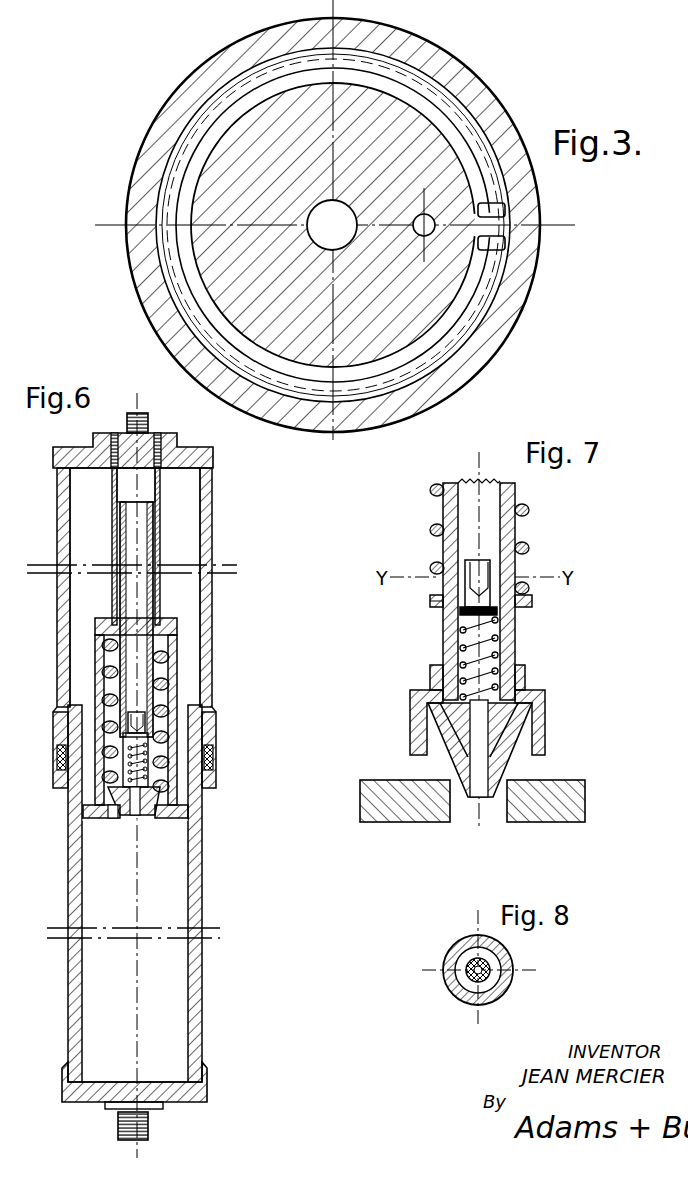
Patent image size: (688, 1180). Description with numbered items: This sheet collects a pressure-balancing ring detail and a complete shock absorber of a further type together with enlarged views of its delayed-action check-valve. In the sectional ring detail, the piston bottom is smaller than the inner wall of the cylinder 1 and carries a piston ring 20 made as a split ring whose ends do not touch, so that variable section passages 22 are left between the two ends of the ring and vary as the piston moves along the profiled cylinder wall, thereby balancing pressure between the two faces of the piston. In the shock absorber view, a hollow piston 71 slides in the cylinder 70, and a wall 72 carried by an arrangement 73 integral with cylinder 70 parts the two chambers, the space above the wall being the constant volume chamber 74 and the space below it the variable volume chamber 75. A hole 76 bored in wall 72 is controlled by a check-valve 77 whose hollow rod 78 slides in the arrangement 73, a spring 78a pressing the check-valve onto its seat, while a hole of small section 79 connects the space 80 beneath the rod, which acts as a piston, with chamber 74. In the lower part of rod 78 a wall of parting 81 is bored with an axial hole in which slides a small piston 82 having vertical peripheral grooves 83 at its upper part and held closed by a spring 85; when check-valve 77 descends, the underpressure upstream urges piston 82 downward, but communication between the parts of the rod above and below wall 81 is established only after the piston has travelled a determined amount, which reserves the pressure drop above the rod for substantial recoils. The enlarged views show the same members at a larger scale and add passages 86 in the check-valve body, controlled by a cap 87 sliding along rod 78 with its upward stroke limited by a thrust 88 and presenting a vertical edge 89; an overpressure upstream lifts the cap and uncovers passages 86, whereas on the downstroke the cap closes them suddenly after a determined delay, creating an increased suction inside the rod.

In FIG. 3, the cylinder 1 is at (522, 262).
In FIG. 3, the piston ring 20 is at (178, 195).
In FIG. 3, the variable section passages 22 is at (497, 233).
In FIG. 6, the cylinder 70 is at (212, 548).
In FIG. 6, the hollow piston 71 is at (195, 842).
In FIG. 6, the wall 72 is at (188, 810).
In FIG. 6, the arrangement 73 is at (162, 492).
In FIG. 6, the constant volume chamber 74 is at (97, 517).
In FIG. 6, the variable volume chamber 75 is at (103, 880).
In FIG. 6, the hole 76 is at (142, 833).
In FIG. 6, the check-valve 77 is at (115, 798).
In FIG. 7, the check-valve 77 is at (520, 762).
In FIG. 6, the hollow rod 78 is at (162, 530).
In FIG. 7, the hollow rod 78 is at (512, 543).
In FIG. 8, the hollow rod 78 is at (503, 953).
In FIG. 6, the spring 78a is at (102, 657).
In FIG. 6, the hole of small section 79 is at (117, 470).
In FIG. 6, the space 80 is at (176, 446).
In FIG. 7, the wall of parting 81 is at (493, 602).
In FIG. 6, the small piston 82 is at (130, 730).
In FIG. 7, the small piston 82 is at (468, 600).
In FIG. 8, the small piston 82 is at (467, 977).
In FIG. 7, the vertical peripheral grooves 83 is at (477, 562).
In FIG. 8, the vertical peripheral grooves 83 is at (455, 953).
In FIG. 7, the spring 85 is at (497, 655).
In FIG. 7, the passages 86 is at (450, 747).
In FIG. 7, the cap 87 is at (440, 682).
In FIG. 7, the thrust 88 is at (432, 600).
In FIG. 7, the vertical edge 89 is at (418, 727).